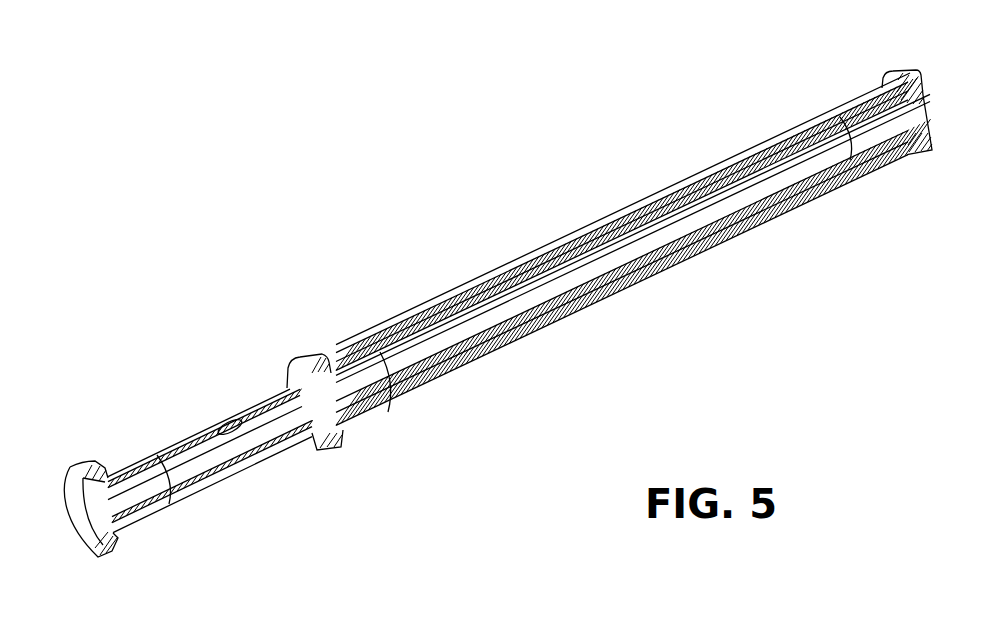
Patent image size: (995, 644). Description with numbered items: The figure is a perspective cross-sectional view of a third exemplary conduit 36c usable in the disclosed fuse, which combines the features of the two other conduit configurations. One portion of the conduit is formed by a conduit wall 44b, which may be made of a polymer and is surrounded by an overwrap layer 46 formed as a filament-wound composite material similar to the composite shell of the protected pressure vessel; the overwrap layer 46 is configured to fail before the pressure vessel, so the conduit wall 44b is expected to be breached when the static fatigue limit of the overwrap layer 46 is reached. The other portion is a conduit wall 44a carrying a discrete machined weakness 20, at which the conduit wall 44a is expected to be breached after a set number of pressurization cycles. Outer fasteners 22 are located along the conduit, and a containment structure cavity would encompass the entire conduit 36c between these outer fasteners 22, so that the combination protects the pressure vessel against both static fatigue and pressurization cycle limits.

The conduit 36c is at (540, 190).
The overwrap layer 46 is at (649, 202).
The conduit wall 44b is at (684, 241).
The conduit wall 44a is at (248, 460).
The weakness 20 is at (230, 420).
The fasteners 22 is at (95, 480).